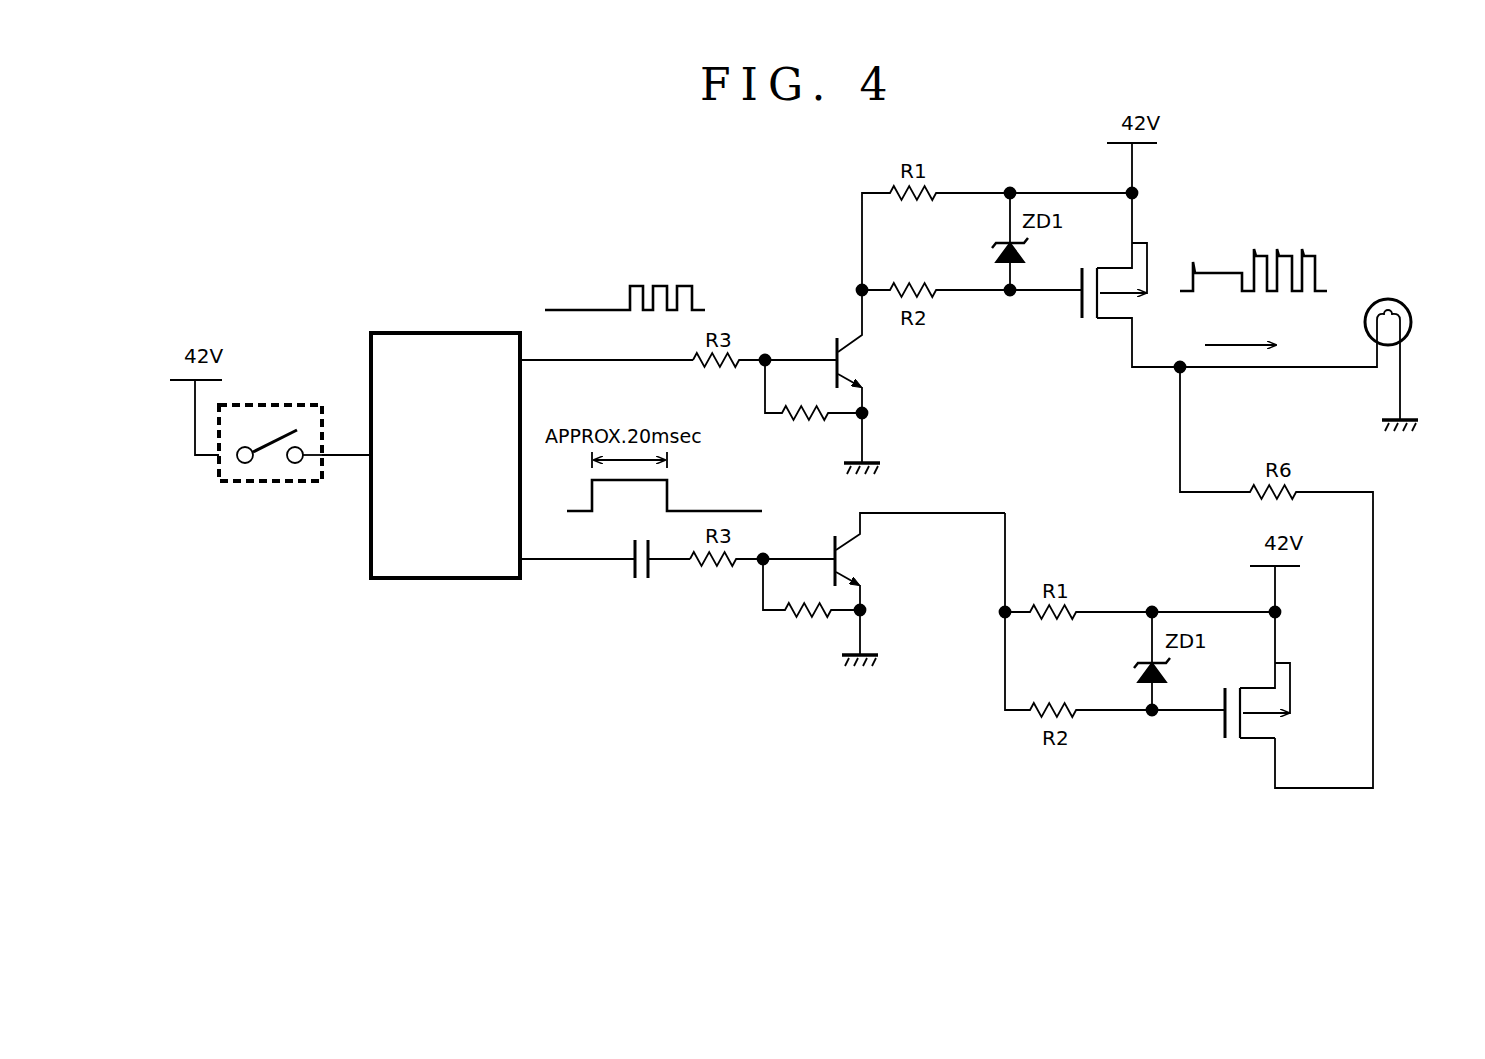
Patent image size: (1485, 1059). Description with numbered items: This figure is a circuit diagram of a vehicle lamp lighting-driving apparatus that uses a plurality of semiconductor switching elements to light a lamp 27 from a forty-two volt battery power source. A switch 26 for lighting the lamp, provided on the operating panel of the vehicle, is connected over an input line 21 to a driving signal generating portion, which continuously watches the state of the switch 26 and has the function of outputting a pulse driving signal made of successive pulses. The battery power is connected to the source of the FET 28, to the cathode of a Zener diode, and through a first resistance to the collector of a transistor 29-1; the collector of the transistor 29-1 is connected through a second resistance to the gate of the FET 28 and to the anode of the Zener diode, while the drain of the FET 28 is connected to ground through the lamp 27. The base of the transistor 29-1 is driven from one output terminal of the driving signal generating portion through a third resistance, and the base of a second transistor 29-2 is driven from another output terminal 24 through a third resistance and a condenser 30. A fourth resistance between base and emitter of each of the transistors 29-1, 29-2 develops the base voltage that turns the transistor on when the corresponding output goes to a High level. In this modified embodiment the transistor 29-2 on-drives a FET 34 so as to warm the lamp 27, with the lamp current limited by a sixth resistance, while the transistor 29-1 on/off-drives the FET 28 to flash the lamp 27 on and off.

The input line from switch to driving signal generating portion 21 is at (345, 452).
The output terminal 24 is at (565, 562).
The switch 26 is at (295, 485).
The lamp 27 is at (1413, 317).
The FET 28 is at (1093, 325).
The transistor 29-1 is at (850, 333).
The transistor 29-2 is at (862, 558).
The condenser 30 is at (638, 580).
The FET 34 is at (1236, 747).